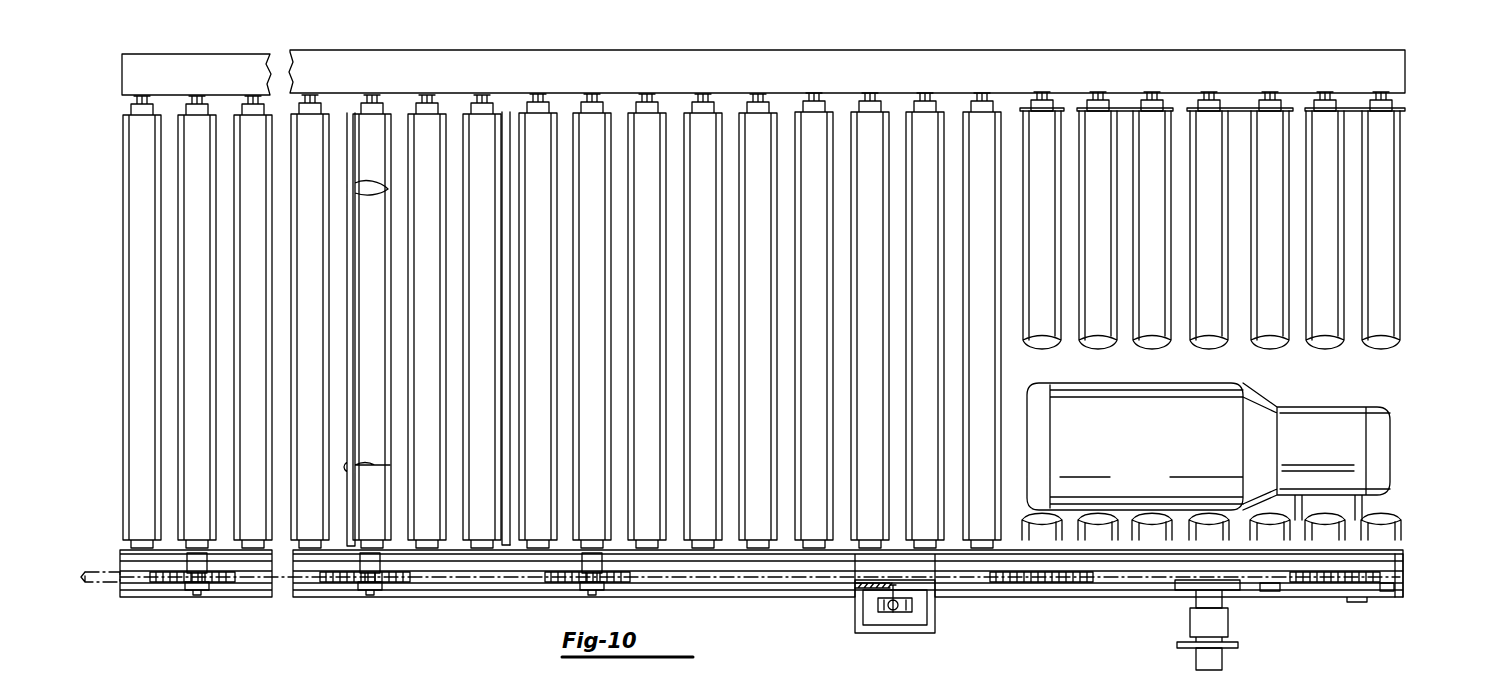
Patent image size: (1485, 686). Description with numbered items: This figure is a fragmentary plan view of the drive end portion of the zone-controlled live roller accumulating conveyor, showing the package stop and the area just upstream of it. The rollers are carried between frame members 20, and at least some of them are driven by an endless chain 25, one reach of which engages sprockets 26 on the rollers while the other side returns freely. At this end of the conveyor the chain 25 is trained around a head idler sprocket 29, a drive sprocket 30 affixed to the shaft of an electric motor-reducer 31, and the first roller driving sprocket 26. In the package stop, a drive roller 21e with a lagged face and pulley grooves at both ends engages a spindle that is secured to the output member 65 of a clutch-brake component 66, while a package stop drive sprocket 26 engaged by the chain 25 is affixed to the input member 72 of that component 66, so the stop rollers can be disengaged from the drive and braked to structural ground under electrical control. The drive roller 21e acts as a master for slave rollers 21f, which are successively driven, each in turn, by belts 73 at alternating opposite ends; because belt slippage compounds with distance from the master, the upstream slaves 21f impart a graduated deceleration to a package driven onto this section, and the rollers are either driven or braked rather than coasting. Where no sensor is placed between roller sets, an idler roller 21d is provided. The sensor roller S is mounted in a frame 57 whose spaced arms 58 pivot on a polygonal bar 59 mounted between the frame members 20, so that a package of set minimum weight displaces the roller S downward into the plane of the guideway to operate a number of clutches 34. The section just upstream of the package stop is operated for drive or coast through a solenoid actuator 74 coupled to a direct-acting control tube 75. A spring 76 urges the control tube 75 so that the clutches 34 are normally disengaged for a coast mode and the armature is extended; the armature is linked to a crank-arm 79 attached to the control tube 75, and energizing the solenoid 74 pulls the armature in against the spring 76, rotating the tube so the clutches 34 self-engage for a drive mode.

The frame members 20 is at (702, 30).
The sensor roller S is at (648, 162).
The spaced arms 58 is at (458, 110).
The bar 59 is at (510, 174).
The frame 57 is at (344, 383).
The belts 73 is at (1132, 107).
The drive roller 21e is at (1207, 122).
The slave rollers 21f is at (1323, 122).
The idler roller 21d is at (1380, 210).
The electric motor-reducer 31 is at (1338, 424).
The control tube 75 is at (765, 583).
The endless chain 25 is at (975, 588).
The clutches 34 is at (190, 562).
The sprockets 26 is at (228, 583).
The solenoid actuator 74 is at (850, 617).
The spring 76 is at (872, 562).
The crank-arm 79 is at (897, 583).
The input member 72 is at (1183, 590).
The clutch-brake component 66 is at (1232, 641).
The output member 65 is at (1225, 668).
The drive sprocket 30 is at (1320, 580).
The head idler sprocket 29 is at (1390, 592).